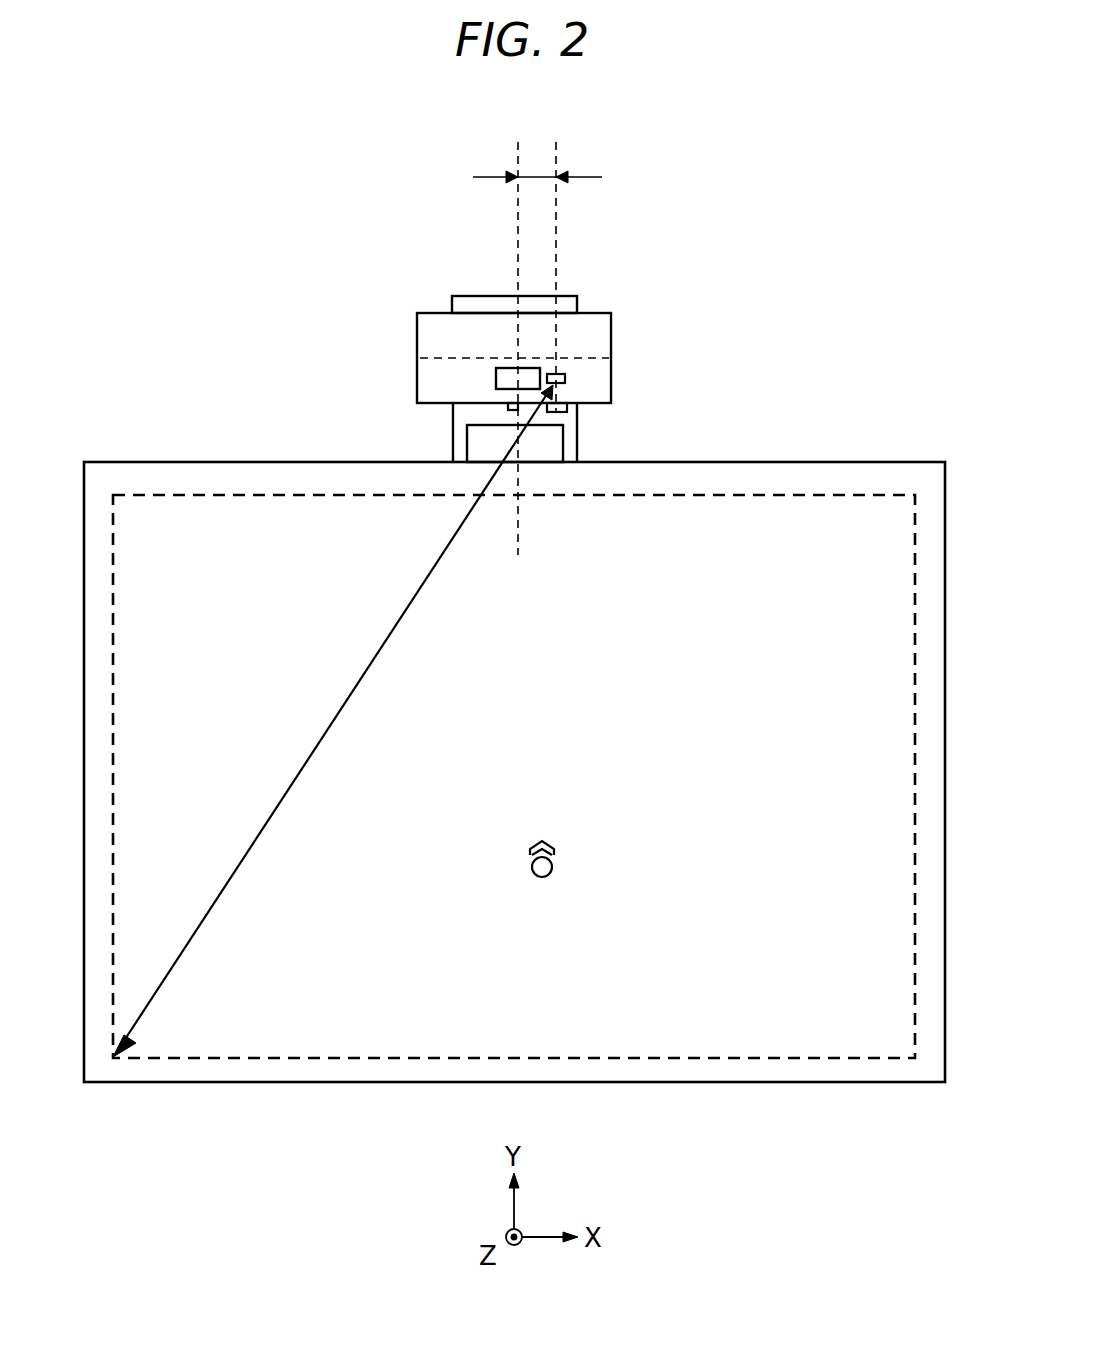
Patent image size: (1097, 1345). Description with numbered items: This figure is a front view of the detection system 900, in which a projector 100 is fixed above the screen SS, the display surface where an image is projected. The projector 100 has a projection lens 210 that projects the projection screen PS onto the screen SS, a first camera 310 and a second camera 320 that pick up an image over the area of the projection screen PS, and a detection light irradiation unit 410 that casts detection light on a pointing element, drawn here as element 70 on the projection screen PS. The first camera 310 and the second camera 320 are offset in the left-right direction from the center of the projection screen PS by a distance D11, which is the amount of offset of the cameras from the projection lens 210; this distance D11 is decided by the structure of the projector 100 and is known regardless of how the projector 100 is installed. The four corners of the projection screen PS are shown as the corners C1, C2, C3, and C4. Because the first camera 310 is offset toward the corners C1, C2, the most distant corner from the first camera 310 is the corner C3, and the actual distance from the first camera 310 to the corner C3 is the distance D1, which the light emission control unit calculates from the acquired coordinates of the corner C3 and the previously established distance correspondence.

The projector 100 is at (611, 333).
The projection lens 210 is at (496, 380).
The first camera 310 is at (566, 378).
The second camera 320 is at (567, 408).
The detection light irradiation unit 410 is at (508, 407).
The pointer 70 is at (530, 862).
The detection system 900 is at (852, 380).
The distance D11 is at (540, 177).
The distance D1 is at (333, 721).
The corner C1 is at (913, 495).
The corner C2 is at (915, 1060).
The corner C3 is at (113, 1060).
The corner C4 is at (113, 495).
The screen SS is at (158, 475).
The projection screen PS is at (258, 490).